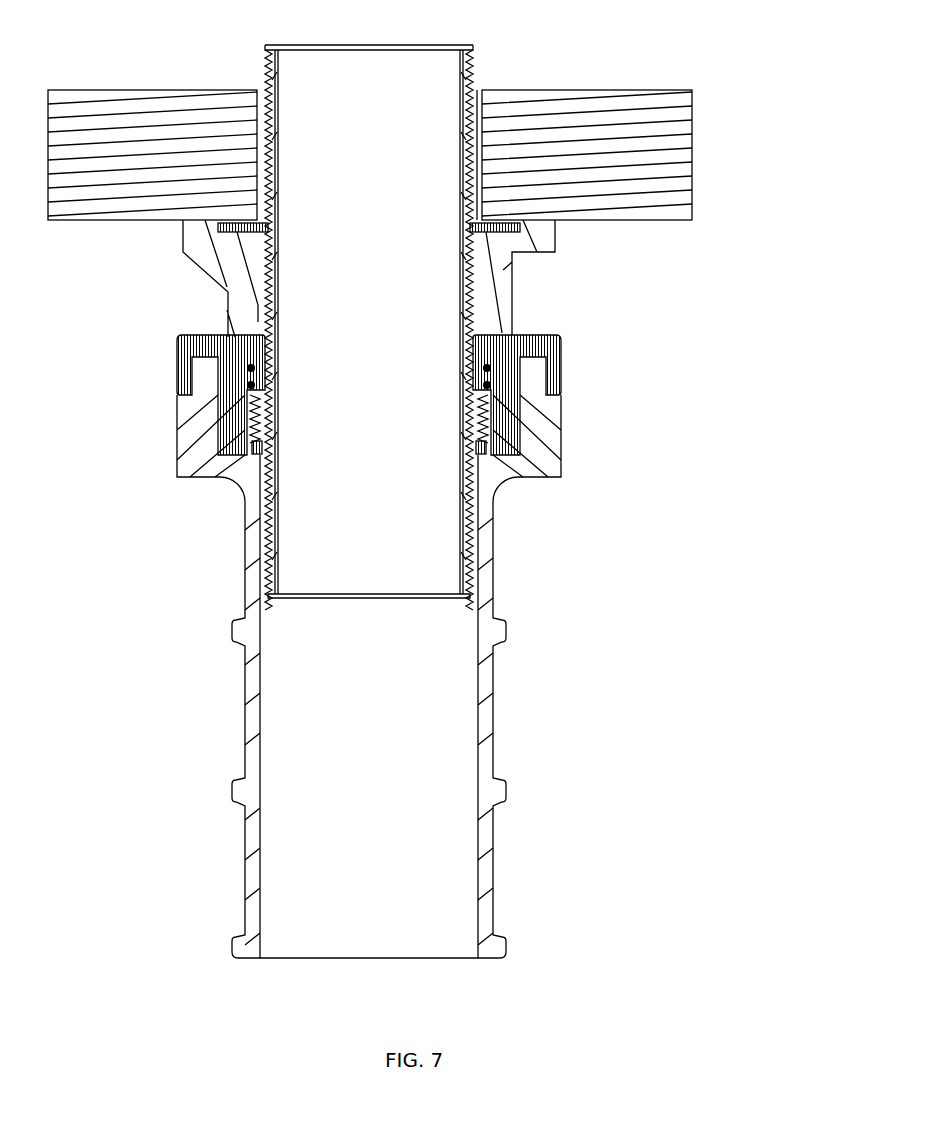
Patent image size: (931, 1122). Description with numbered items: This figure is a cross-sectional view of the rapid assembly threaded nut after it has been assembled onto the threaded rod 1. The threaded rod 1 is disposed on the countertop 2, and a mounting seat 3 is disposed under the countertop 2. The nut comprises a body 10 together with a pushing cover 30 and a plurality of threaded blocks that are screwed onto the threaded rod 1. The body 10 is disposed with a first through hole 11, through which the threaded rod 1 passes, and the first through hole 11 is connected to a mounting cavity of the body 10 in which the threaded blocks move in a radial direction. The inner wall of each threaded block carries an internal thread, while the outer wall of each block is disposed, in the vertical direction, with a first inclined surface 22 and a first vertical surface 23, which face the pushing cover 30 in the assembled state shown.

The threaded rod 1 is at (470, 62).
The countertop 2 is at (655, 175).
The mounting seat 3 is at (538, 242).
The pushing cover 30 is at (562, 353).
The first inclined surface 22 is at (492, 410).
The first vertical surface 23 is at (513, 452).
The body 10 is at (488, 742).
The first through hole 11 is at (447, 850).